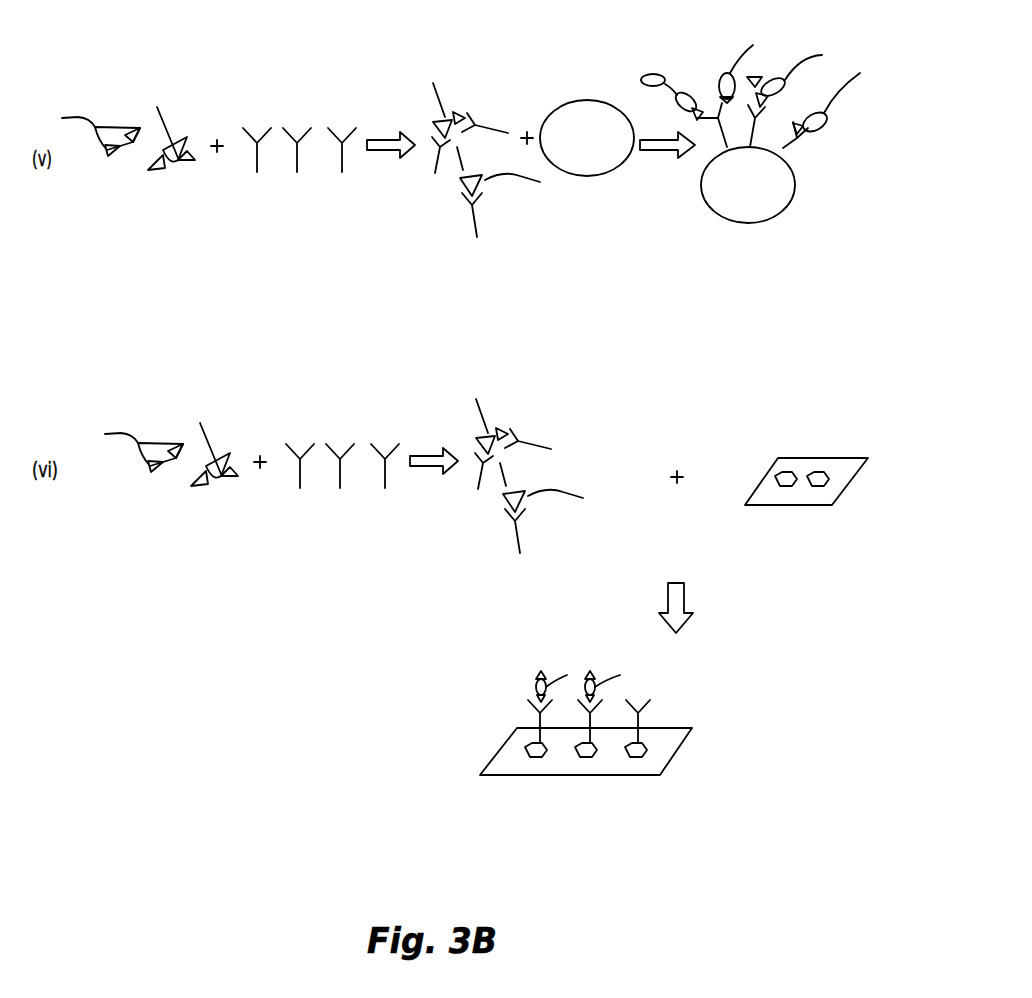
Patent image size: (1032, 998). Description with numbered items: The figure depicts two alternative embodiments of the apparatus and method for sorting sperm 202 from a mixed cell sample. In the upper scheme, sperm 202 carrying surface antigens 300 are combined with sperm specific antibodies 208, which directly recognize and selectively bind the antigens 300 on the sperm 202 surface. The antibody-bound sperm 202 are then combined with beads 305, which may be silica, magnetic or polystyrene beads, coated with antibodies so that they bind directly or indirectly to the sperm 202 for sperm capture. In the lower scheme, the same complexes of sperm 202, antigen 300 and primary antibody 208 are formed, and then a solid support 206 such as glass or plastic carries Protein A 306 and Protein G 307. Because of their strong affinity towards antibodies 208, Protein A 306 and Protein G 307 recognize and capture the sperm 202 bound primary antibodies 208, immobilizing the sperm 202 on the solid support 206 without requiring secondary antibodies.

The sperm 202 is at (165, 120).
The sperm specific antibody 208 is at (257, 168).
The antigen 300 is at (183, 165).
The beads 305 is at (608, 173).
The solid support 206 is at (755, 505).
The Protein A 306 is at (784, 487).
The Protein G 307 is at (819, 487).